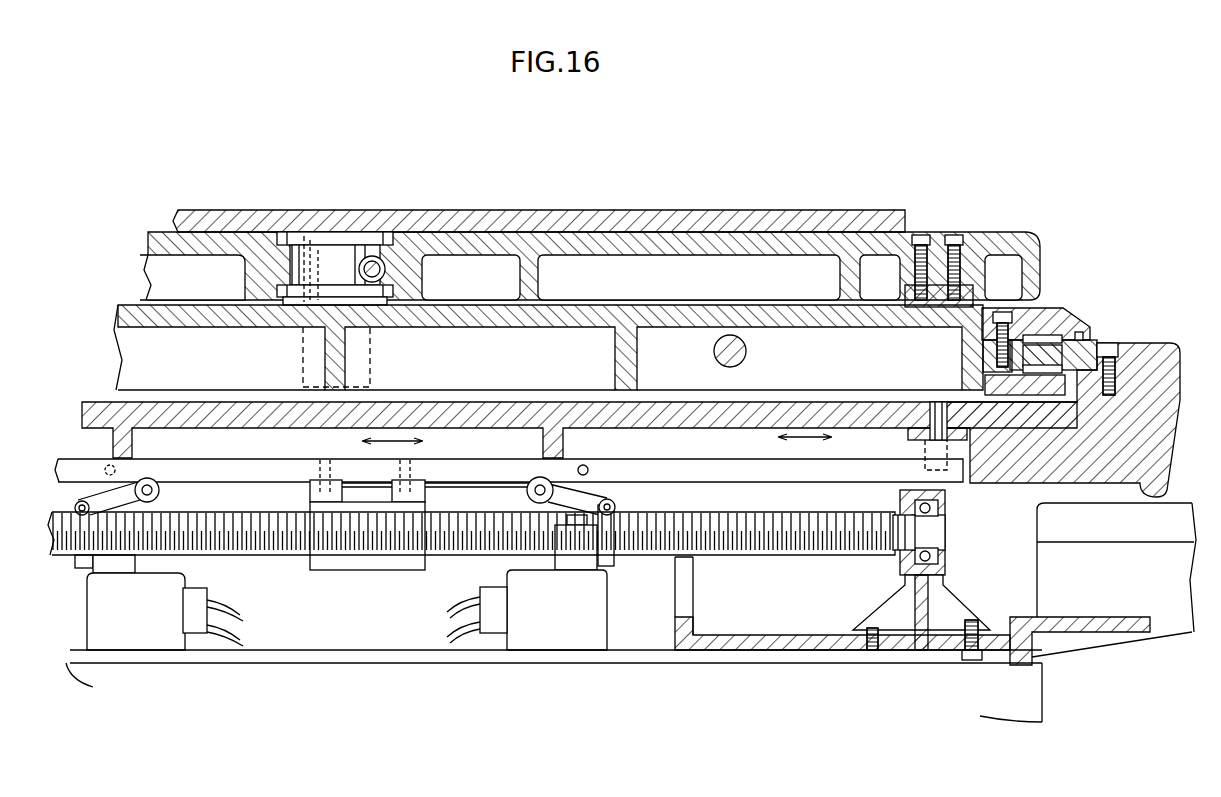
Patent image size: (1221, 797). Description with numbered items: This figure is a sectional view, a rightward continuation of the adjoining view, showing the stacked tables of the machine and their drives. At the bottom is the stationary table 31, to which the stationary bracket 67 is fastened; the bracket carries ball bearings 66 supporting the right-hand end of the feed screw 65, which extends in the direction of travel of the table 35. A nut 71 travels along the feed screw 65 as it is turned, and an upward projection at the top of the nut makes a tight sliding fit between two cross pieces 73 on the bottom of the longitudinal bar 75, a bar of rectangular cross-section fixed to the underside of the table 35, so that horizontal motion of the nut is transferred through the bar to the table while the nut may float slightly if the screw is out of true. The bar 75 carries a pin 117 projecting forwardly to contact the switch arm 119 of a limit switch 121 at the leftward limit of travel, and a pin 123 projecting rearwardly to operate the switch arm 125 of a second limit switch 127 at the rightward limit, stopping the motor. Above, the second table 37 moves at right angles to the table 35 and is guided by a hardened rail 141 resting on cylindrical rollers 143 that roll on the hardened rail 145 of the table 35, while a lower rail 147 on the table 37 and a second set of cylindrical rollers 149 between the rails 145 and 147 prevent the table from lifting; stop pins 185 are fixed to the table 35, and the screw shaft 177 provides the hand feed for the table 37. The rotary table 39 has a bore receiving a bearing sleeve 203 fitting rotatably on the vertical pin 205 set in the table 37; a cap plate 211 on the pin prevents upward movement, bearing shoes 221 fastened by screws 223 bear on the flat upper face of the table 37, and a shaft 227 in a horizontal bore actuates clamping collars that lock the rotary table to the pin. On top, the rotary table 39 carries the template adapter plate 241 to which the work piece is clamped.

The stationary table 31 is at (1092, 630).
The table 35 is at (683, 427).
The second table 37 is at (590, 328).
The rotary table 39 is at (1030, 240).
The feed screw 65 is at (265, 553).
The ball bearings 66 is at (947, 512).
The stationary bracket 67 is at (930, 608).
The nut 71 is at (338, 560).
The cross pieces 73 is at (308, 492).
The longitudinal bar 75 is at (750, 479).
The pin 117 is at (586, 464).
The switch arm 119 is at (527, 490).
The limit switch 121 is at (608, 595).
The pin 123 is at (108, 463).
The switch arm 125 is at (128, 487).
The second limit switch 127 is at (95, 592).
The hardened rail 141 is at (1050, 306).
The cylindrical rollers 143 is at (1065, 338).
The hardened rail 145 is at (1105, 344).
The lower rail 147 is at (1018, 397).
The cylindrical rollers 149 is at (1044, 373).
The screw shaft 177 is at (714, 356).
The stop pins 185 is at (1082, 333).
The bearing sleeve 203 is at (292, 258).
The vertical pin 205 is at (292, 275).
The cap plate 211 is at (320, 233).
The bearing shoes 221 is at (943, 309).
The screws 223 is at (955, 234).
The shaft 227 is at (388, 268).
The template adapter plate 241 is at (661, 218).